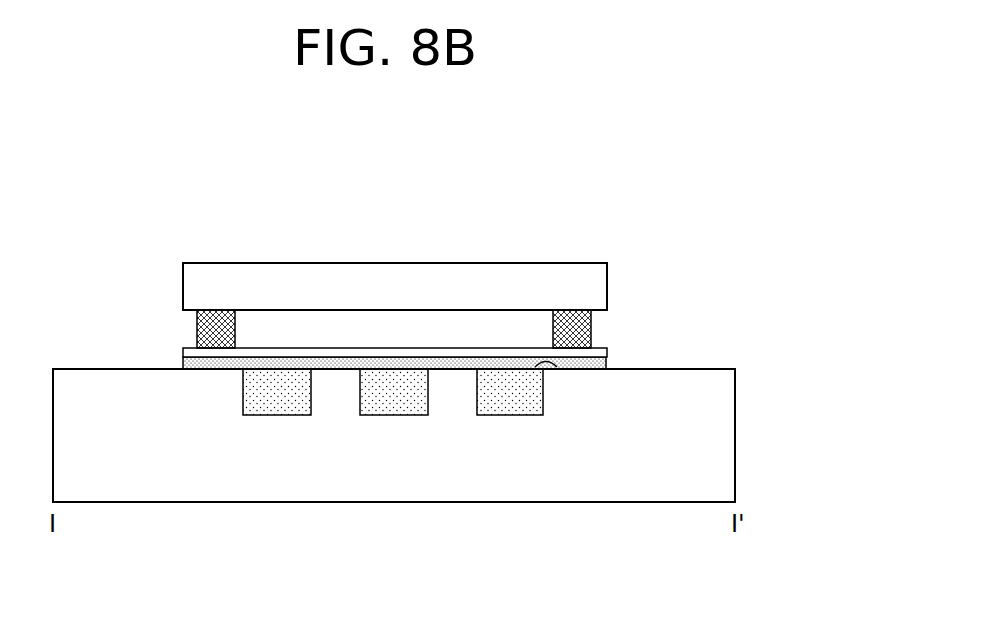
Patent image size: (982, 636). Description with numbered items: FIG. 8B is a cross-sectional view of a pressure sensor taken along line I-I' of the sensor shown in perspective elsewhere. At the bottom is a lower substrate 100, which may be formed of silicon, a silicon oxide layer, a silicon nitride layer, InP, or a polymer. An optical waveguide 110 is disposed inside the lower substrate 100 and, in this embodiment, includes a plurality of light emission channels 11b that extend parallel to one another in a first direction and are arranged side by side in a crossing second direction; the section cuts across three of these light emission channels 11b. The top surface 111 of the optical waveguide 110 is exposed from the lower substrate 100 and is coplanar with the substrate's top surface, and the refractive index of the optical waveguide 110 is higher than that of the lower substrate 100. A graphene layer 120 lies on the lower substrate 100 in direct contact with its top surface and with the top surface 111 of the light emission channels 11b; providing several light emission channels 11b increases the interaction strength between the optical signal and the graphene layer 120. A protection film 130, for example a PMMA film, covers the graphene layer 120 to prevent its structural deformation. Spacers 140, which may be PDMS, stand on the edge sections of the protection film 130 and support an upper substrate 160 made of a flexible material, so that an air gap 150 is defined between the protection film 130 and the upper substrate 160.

The lower substrate 100 is at (720, 436).
The optical waveguide 110 is at (393, 487).
The light emission channels 11b is at (513, 558).
The top surface of the optical waveguide 111 is at (557, 367).
The graphene layer 120 is at (597, 365).
The protection film 130 is at (595, 353).
The spacers 140 is at (583, 327).
The air gap 150 is at (405, 328).
The upper substrate 160 is at (593, 282).